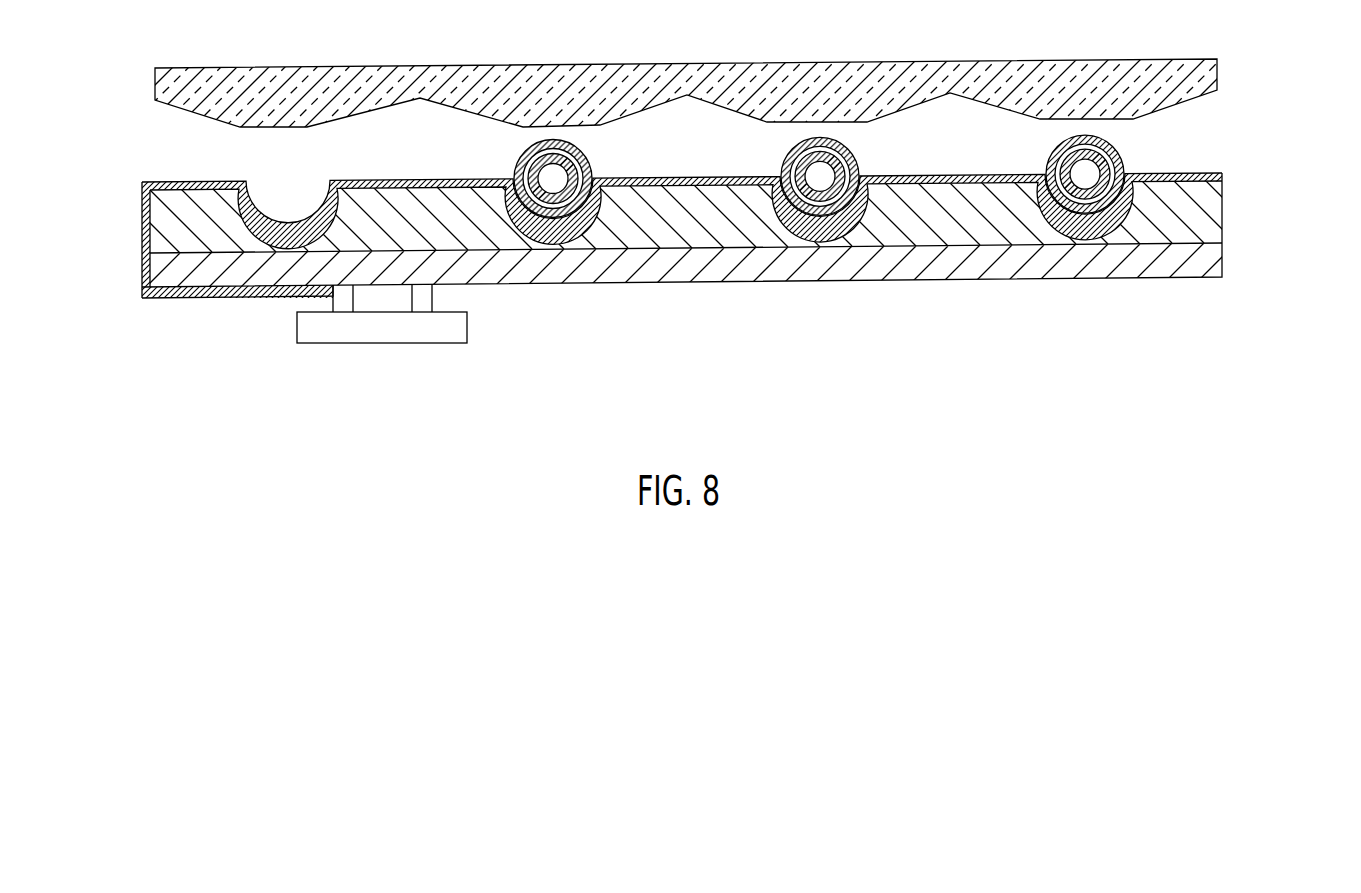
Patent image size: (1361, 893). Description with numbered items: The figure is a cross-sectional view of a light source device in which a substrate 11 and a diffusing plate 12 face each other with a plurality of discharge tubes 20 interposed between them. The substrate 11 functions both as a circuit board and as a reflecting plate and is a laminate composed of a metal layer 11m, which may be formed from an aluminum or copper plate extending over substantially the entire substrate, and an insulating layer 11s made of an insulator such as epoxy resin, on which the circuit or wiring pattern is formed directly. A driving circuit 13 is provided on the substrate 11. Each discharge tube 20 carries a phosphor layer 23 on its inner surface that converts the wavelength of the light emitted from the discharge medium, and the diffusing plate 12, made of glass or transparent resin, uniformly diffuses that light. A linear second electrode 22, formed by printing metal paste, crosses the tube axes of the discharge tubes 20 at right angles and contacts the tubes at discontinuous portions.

The substrate 11 is at (1308, 164).
The metal layer 11m is at (1220, 189).
The insulating layer 11s is at (1218, 259).
The diffusing plate 12 is at (1217, 61).
The driving circuit 13 is at (316, 338).
The discharge tube 20 is at (1113, 162).
The second electrode 22 is at (142, 230).
The phosphor layer 23 is at (1123, 166).